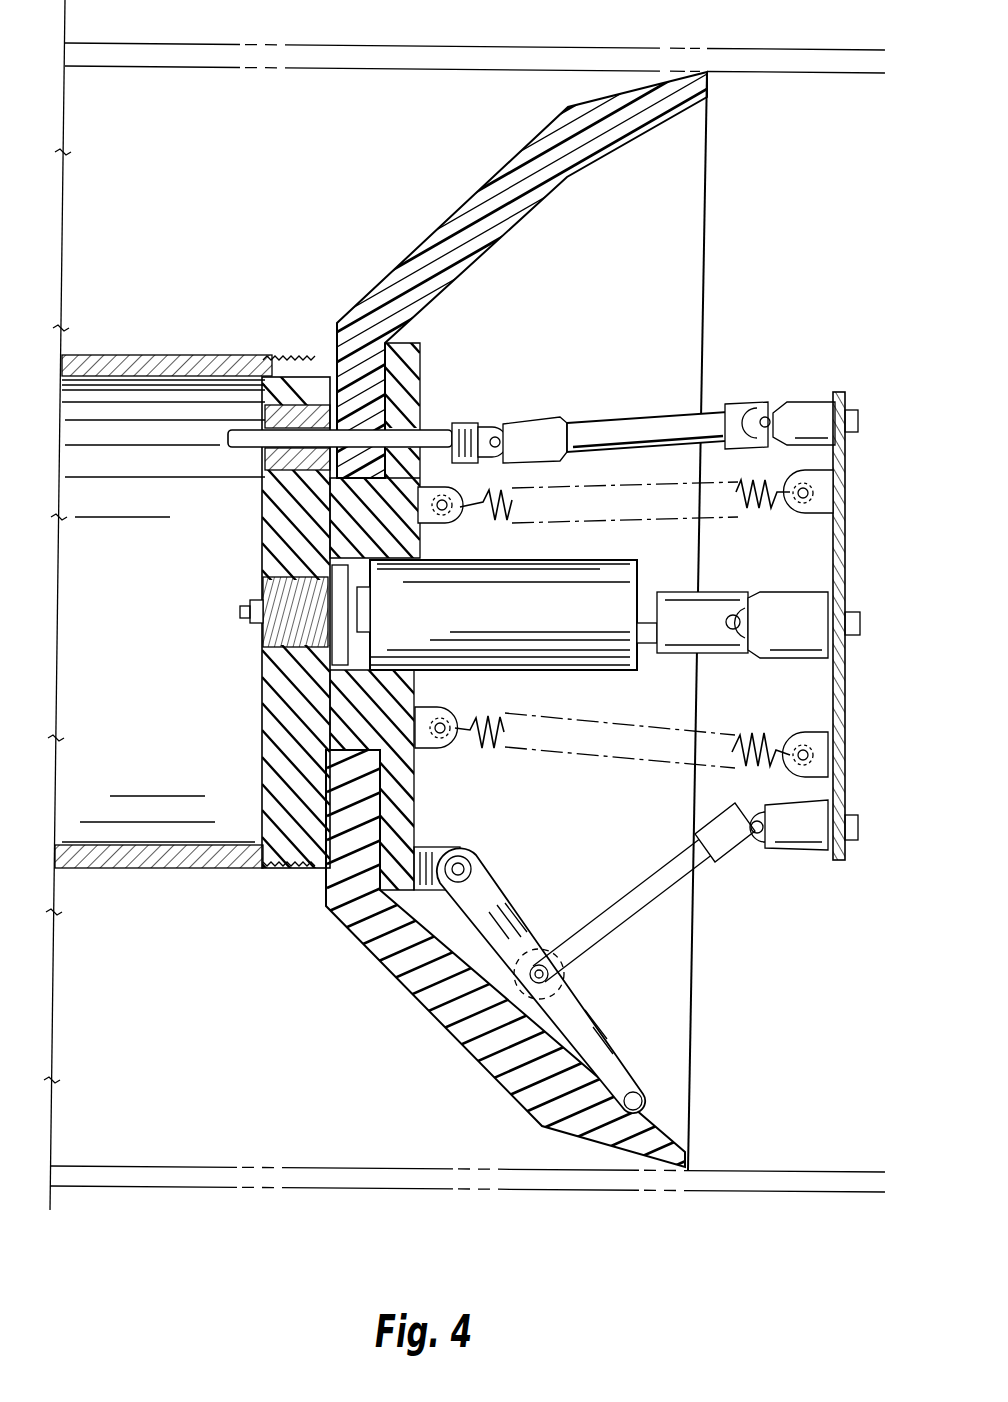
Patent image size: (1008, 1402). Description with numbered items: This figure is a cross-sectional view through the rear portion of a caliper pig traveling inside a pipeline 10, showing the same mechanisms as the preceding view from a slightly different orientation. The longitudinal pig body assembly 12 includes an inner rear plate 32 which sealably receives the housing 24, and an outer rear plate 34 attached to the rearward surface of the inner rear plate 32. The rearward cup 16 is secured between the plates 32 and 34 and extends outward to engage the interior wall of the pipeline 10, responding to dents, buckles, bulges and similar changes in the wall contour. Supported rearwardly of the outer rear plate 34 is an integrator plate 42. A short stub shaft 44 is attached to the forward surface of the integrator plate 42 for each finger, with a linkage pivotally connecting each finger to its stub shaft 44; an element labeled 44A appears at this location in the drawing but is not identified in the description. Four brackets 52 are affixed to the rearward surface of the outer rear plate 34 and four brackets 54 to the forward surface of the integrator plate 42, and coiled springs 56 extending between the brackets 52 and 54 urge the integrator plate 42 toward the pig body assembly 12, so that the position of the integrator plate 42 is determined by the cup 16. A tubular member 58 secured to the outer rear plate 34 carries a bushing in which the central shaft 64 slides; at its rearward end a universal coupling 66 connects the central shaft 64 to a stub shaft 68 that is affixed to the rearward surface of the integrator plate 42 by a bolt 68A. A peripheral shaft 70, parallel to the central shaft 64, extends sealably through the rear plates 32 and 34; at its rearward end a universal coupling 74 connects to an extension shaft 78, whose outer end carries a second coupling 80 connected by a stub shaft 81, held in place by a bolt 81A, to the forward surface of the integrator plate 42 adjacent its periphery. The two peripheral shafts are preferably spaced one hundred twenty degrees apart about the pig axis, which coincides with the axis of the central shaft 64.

The pipeline 10 is at (300, 45).
The pig body assembly 12 is at (121, 333).
The rearward cup 16 is at (465, 212).
The housing 24 is at (160, 355).
The inner rear plate 32 is at (283, 520).
The outer rear plate 34 is at (400, 688).
The integrator plate 42 is at (846, 702).
The stub shaft 44 is at (820, 852).
The bolt 44A is at (858, 825).
The brackets 52 is at (447, 523).
The brackets 54 is at (818, 516).
The coiled springs 56 is at (603, 520).
The tubular member 58 is at (605, 568).
The central shaft 64 is at (242, 612).
The universal coupling 66 is at (714, 600).
The stub shaft 68 is at (781, 605).
The bolt 68A is at (860, 622).
The peripheral shaft 70 is at (453, 432).
The universal coupling 74 is at (500, 430).
The extension shaft 78 is at (630, 425).
The second coupling 80 is at (763, 402).
The stub shaft 81 is at (808, 410).
The bolt 81A is at (858, 420).